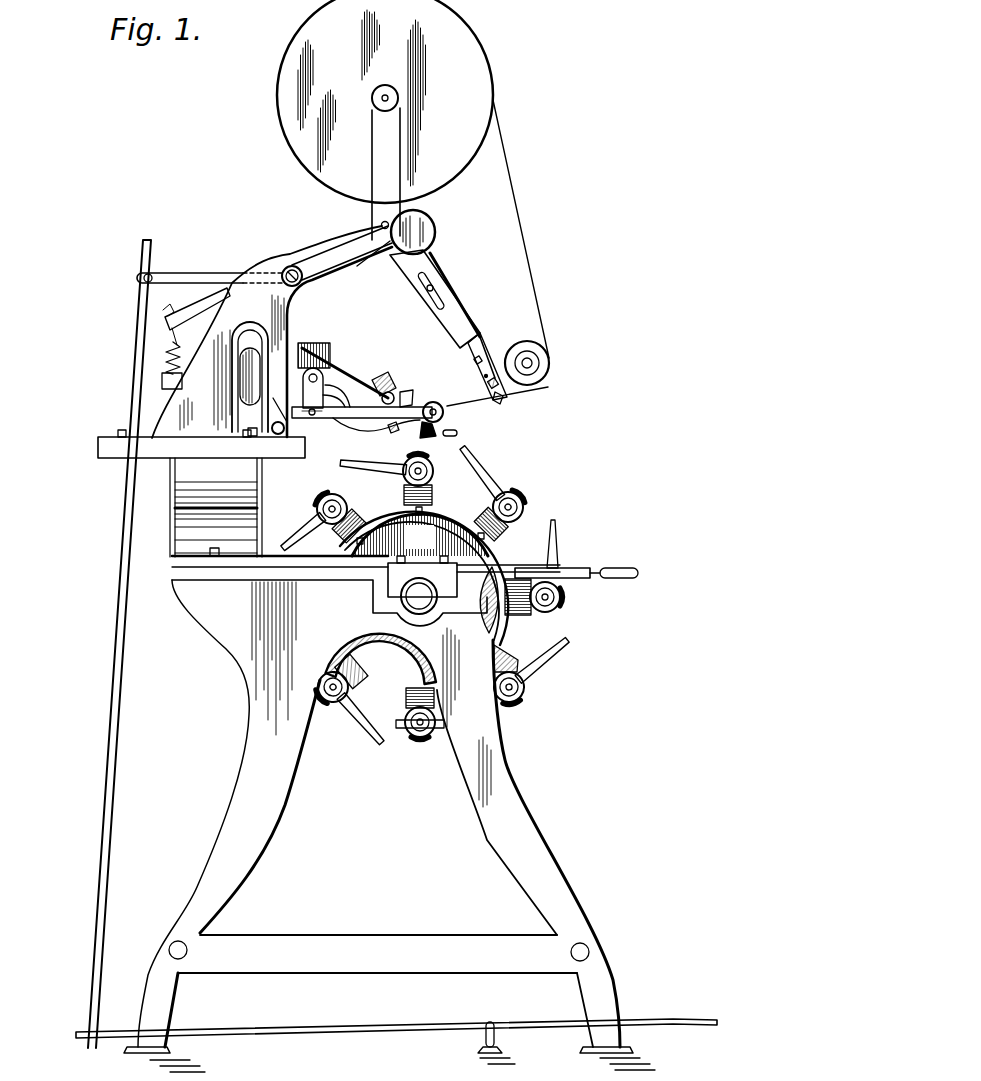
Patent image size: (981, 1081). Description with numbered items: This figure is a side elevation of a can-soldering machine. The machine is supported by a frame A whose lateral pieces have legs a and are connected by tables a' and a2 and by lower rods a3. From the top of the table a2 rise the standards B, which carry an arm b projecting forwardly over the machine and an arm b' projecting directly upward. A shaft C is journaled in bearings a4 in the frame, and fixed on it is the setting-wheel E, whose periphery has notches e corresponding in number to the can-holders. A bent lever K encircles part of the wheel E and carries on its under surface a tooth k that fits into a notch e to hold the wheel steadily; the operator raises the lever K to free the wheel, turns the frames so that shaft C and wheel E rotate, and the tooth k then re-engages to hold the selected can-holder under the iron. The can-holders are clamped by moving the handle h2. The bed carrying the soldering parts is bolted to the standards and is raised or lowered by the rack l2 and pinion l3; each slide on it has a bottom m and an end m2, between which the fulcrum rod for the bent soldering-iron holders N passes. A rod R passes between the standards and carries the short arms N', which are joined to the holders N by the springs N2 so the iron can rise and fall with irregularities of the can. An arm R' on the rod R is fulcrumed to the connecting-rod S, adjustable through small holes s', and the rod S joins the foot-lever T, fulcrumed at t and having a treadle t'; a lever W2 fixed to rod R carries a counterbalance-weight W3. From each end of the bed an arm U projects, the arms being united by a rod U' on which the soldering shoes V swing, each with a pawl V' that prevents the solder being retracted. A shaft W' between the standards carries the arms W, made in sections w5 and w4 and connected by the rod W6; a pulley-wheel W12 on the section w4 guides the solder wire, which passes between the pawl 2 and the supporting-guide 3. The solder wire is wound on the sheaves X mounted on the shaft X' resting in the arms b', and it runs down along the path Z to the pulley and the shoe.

The sheave X is at (385, 101).
The shaft X' is at (366, 95).
The arm b' is at (386, 174).
The counterbalance-weight W3 is at (436, 228).
The shaft W' is at (361, 214).
The arm b is at (342, 253).
The standard B is at (272, 332).
The rod R is at (267, 261).
The arm or lever R' is at (209, 266).
The small holes s' is at (125, 296).
The connecting-rod S is at (139, 388).
The short lever or arm N' is at (196, 316).
The spring N2 is at (187, 351).
The soldering-iron holder N is at (179, 373).
The end of slide m2 is at (330, 352).
The bottom of slide m is at (358, 388).
The arm U is at (362, 436).
The rod U' is at (438, 405).
The soldering shoe or point V is at (463, 427).
The pawl V' is at (483, 433).
The belt Z is at (518, 206).
The pulley-wheel W12 is at (540, 353).
The rod W6 is at (490, 377).
The arm W is at (448, 324).
The arm section w5 is at (452, 318).
The arm section w4 is at (472, 350).
The lever W2 is at (375, 267).
The pawl 2 is at (492, 388).
The supporting-guide 3 is at (508, 398).
The table a2 is at (112, 447).
The pinion l3 is at (276, 432).
The rack l2 is at (290, 434).
The table a' is at (353, 517).
The frame A is at (389, 826).
The leg a is at (382, 859).
The lower rod a3 is at (175, 946).
The setting-wheel E is at (424, 578).
The tooth k is at (423, 507).
The shaft C is at (422, 585).
The bearing a4 is at (447, 613).
The handle h2 is at (300, 537).
The notch e is at (528, 515).
The bent lever K is at (578, 572).
The foot-lever T is at (396, 1019).
The fulcrum t is at (500, 1043).
The treadle t' is at (722, 1006).